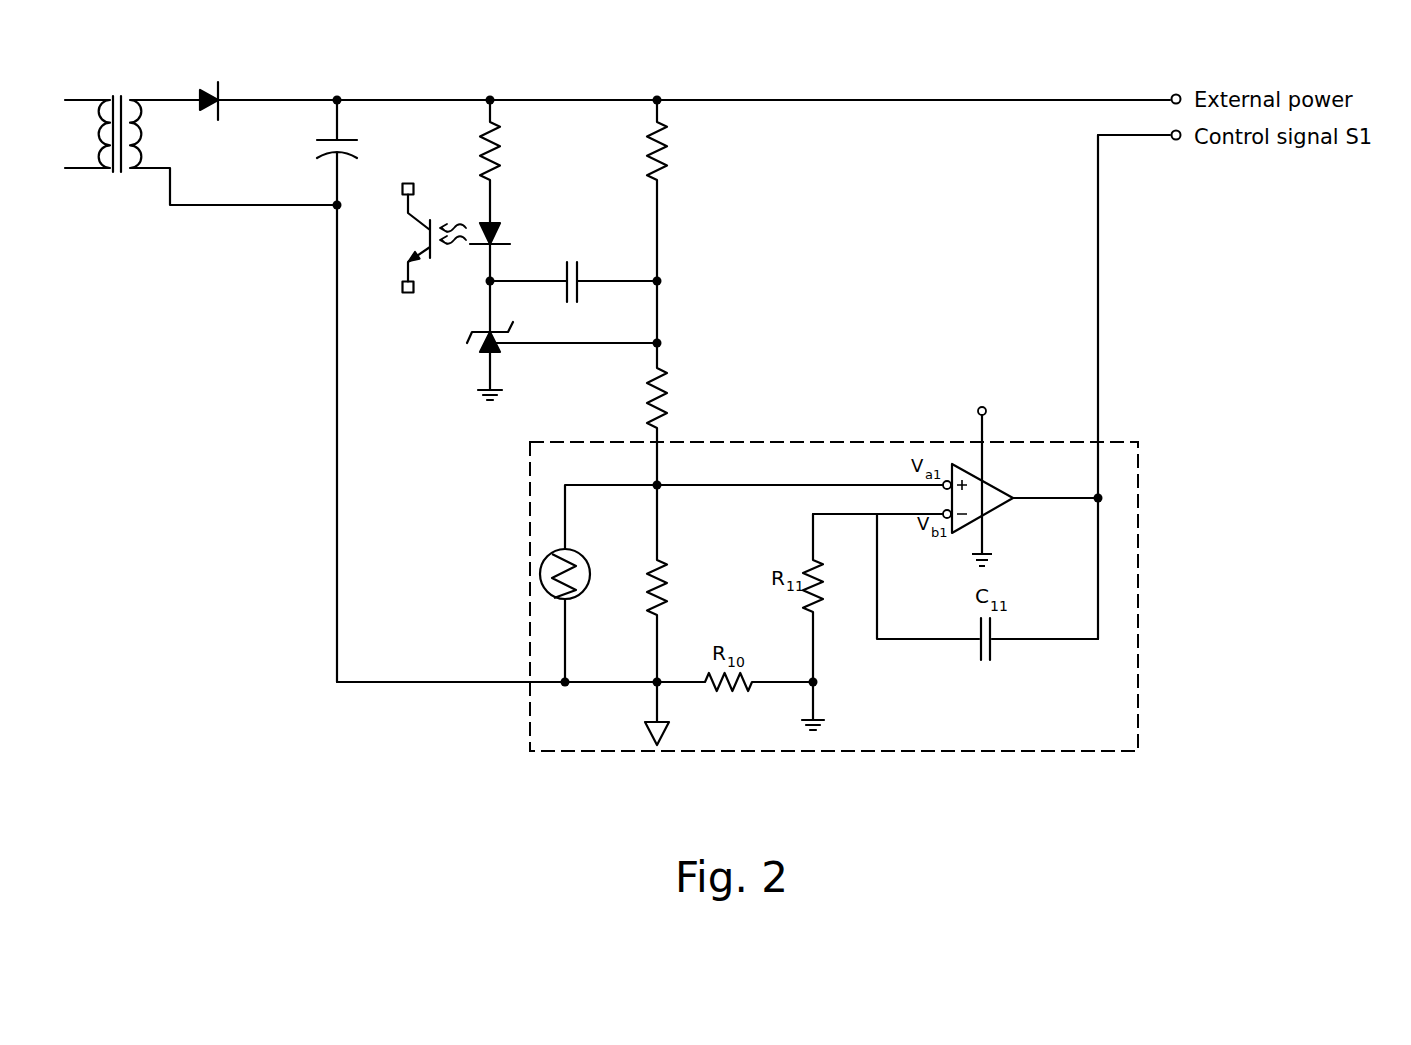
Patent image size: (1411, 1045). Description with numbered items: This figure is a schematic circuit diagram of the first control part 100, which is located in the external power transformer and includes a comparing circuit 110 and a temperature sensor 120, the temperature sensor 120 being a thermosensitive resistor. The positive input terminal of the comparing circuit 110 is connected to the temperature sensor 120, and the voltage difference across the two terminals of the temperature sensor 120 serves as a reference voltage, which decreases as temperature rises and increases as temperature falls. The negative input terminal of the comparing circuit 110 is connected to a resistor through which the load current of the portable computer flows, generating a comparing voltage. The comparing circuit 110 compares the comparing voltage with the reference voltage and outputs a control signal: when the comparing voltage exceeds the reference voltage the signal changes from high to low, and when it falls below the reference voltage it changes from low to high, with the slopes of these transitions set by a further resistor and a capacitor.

The first control part 100 is at (1138, 706).
The comparing circuit 110 is at (978, 502).
The temperature sensor 120 is at (540, 575).